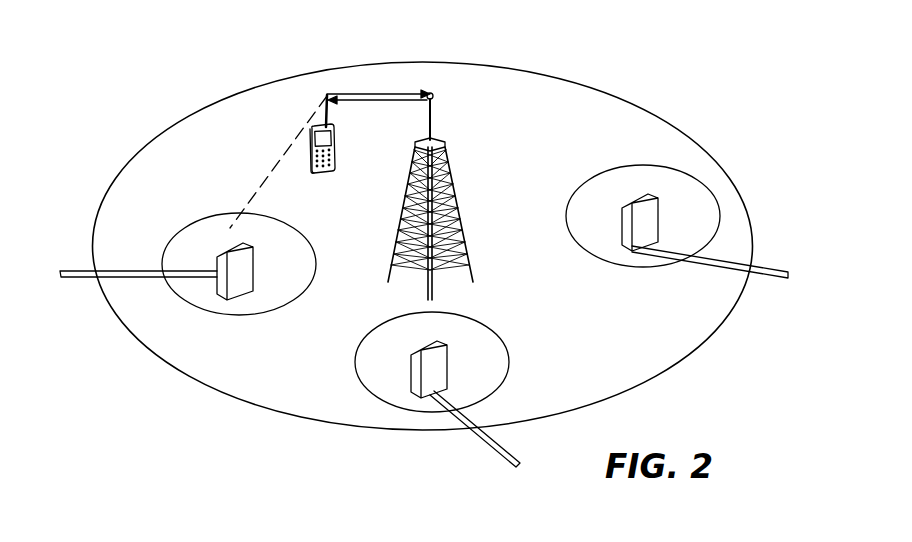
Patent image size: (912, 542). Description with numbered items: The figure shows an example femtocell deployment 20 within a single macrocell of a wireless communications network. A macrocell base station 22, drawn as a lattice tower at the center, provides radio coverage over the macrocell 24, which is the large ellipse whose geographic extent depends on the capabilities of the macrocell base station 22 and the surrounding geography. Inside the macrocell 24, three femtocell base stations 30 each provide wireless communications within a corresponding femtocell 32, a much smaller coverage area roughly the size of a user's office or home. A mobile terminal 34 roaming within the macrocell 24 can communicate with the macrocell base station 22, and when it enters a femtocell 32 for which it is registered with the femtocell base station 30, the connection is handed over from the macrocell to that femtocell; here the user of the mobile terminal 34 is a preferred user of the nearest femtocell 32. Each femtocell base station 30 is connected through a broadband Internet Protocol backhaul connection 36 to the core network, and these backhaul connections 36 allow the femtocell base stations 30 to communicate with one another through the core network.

The wireless communication system 20 is at (232, 85).
The macrocell base station 22 is at (463, 223).
The macrocell 24 is at (590, 85).
The femtocell base station 30 is at (254, 270).
The femtocell 32 is at (214, 216).
The mobile terminal 34 is at (336, 150).
The backhaul connection 36 is at (76, 282).